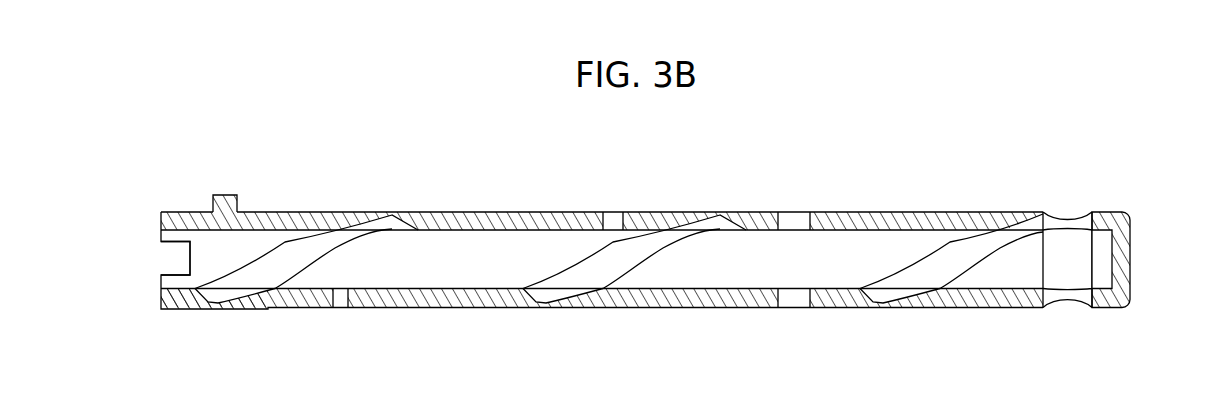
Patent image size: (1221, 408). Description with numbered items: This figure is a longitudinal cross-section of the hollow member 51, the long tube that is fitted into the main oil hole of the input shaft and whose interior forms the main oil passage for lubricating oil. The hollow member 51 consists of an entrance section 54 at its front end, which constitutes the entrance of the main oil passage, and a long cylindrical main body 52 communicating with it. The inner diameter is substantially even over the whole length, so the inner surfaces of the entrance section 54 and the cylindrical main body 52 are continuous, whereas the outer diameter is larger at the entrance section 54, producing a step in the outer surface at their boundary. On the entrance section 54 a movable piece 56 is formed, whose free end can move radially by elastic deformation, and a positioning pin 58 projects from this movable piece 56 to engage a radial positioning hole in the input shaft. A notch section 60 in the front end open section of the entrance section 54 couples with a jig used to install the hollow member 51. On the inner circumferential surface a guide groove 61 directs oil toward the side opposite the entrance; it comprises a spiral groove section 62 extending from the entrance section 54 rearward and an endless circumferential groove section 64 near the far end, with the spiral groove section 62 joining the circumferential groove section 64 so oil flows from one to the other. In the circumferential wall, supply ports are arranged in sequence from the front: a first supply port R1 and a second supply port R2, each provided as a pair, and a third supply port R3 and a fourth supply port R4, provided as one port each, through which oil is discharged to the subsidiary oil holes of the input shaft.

The hollow member 51 is at (925, 182).
The cylindrical main body 52 is at (623, 308).
The entrance section 54 is at (230, 310).
The movable piece 56 is at (257, 211).
The positioning pin 58 is at (227, 195).
The notch section 60 is at (172, 275).
The guide groove 61 is at (600, 256).
The spiral groove section 62 is at (330, 248).
The circumferential groove section 64 is at (1080, 261).
The first supply port R1 is at (1067, 222).
The second supply port R2 is at (793, 212).
The third supply port R3 is at (612, 212).
The fourth supply port R4 is at (342, 310).